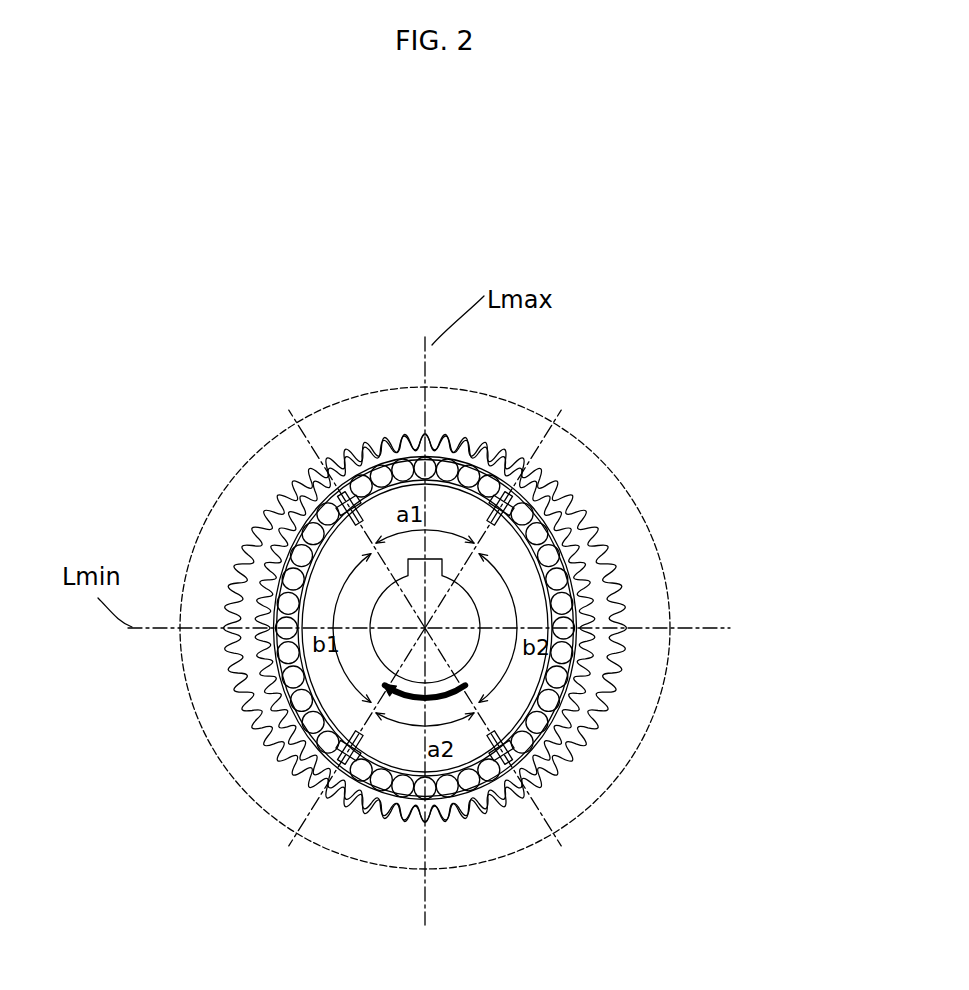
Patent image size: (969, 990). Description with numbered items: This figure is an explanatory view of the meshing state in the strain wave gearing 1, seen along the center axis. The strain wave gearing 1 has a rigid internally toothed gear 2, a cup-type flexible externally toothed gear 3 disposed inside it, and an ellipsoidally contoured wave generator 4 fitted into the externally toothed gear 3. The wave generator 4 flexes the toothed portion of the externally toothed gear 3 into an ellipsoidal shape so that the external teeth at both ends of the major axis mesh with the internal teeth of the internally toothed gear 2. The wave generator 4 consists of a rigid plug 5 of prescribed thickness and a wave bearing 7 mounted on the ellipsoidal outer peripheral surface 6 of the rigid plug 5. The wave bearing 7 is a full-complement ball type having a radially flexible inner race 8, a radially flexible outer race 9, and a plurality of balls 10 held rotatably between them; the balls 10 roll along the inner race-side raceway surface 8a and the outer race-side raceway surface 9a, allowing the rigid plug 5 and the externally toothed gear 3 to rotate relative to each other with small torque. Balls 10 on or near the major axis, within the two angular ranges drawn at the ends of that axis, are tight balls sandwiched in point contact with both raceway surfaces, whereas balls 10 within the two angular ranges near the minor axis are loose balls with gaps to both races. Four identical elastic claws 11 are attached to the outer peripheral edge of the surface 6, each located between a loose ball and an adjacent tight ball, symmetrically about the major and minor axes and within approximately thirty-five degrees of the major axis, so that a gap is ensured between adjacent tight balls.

The strain wave gearing 1 is at (606, 421).
The rigid internally toothed gear 2 is at (475, 683).
The flexible externally toothed gear 3 is at (496, 683).
The wave generator 4 is at (507, 652).
The rigid plug 5 is at (468, 818).
The ellipsoidal outer peripheral surface 6 is at (409, 818).
The wave bearing 7 is at (507, 652).
The inner race 8 is at (508, 635).
The inner race-side raceway surface 8a is at (548, 733).
The outer race 9 is at (473, 670).
The outer race-side raceway surface 9a is at (547, 753).
The balls 10 is at (550, 707).
The elastic claw 11 is at (326, 481).